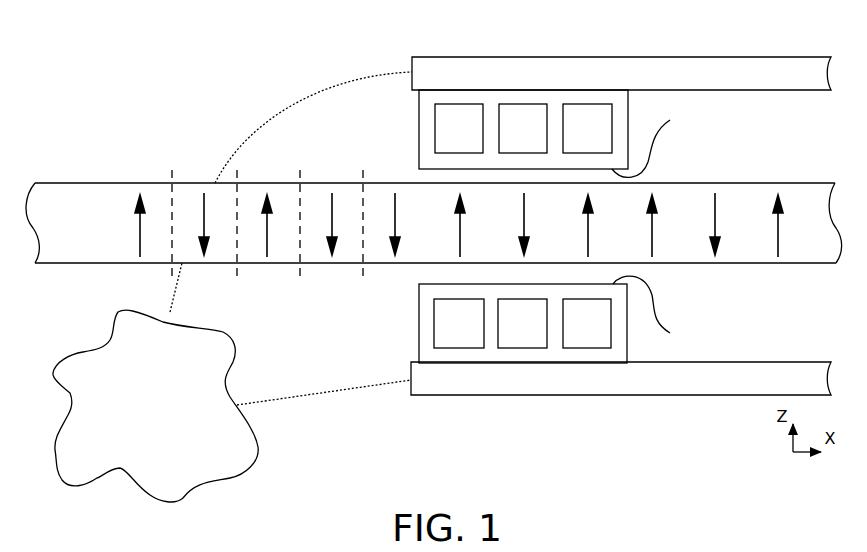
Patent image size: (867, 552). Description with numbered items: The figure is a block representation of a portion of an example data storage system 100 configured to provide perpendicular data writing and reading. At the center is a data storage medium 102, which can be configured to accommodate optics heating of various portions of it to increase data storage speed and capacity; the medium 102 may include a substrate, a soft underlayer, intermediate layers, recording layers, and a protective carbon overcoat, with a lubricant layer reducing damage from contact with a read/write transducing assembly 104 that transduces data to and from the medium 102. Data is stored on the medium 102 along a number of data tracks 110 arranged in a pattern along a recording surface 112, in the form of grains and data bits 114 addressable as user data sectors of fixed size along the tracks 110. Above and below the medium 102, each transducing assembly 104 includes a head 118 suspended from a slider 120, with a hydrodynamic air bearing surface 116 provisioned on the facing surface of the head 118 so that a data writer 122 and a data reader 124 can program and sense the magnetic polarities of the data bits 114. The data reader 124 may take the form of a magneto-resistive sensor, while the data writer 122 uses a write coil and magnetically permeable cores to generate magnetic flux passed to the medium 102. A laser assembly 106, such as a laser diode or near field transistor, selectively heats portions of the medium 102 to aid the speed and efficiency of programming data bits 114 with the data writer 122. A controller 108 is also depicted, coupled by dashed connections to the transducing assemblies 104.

The data storage system 100 is at (141, 48).
The data storage medium 102 is at (434, 223).
The read/write transducing assembly 104 is at (584, 235).
The laser assembly 106 is at (587, 104).
The controller 108 is at (232, 287).
The data tracks 110 is at (331, 170).
The recording surface 112 is at (79, 181).
The data bits 114 is at (267, 250).
The air bearing surface 116 is at (659, 225).
The head 118 is at (419, 153).
The slider 120 is at (621, 226).
The data writer 122 is at (521, 104).
The data reader 124 is at (435, 116).